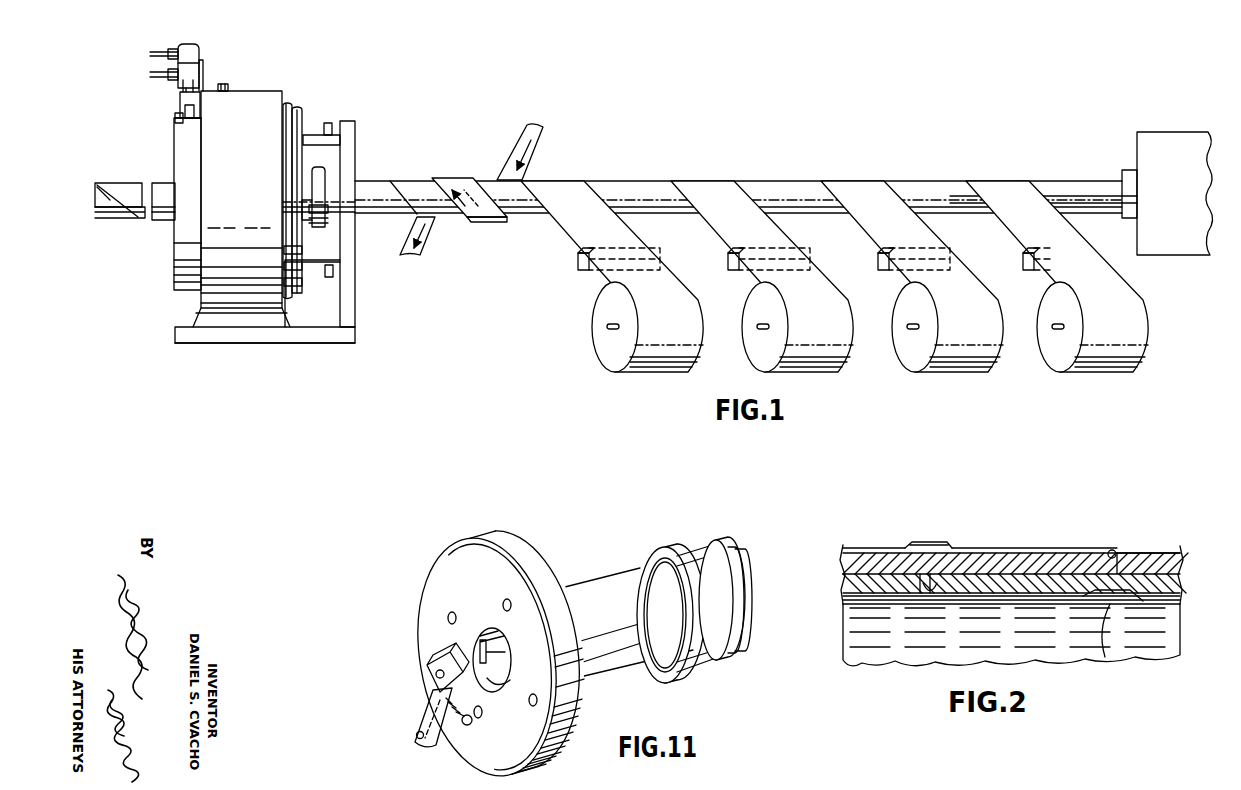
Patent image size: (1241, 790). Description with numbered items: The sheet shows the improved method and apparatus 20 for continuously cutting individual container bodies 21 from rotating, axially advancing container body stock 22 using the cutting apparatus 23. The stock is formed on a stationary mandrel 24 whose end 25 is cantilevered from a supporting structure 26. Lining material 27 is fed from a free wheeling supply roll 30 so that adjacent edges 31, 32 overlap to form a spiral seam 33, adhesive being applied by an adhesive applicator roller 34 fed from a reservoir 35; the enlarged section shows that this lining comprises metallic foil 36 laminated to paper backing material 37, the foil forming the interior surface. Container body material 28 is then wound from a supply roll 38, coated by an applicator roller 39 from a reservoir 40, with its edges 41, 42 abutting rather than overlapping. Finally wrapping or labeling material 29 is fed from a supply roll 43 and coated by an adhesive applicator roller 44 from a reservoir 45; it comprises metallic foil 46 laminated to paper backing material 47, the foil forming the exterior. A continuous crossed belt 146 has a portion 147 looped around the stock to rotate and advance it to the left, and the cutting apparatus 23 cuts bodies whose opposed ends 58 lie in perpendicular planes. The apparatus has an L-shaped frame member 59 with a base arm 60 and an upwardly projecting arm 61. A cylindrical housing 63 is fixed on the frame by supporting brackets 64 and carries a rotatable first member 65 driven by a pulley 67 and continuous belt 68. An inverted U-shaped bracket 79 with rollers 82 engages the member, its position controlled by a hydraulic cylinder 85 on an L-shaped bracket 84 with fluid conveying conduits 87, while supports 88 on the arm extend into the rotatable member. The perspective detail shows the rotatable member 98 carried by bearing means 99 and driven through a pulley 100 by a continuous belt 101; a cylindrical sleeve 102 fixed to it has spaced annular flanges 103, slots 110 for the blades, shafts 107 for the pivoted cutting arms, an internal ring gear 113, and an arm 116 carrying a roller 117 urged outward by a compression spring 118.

In FIG. 1, the improved method and apparatus 20 is at (738, 104).
In FIG. 1, the container body 21 is at (115, 181).
In FIG. 1, the container body stock 22 is at (384, 216).
In FIG. 2, the container body stock 22 is at (1078, 540).
In FIG. 1, the cutting apparatus 23 is at (273, 78).
In FIG. 1, the stationary mandrel 24 is at (1055, 181).
In FIG. 1, the end of mandrel 25 is at (1112, 181).
In FIG. 1, the supporting structure 26 is at (1172, 140).
In FIG. 1, the lining material 27 is at (1098, 264).
In FIG. 2, the lining material 27 is at (945, 600).
In FIG. 1, the container body material 28 is at (780, 233).
In FIG. 2, the container body material 28 is at (1182, 586).
In FIG. 1, the wrapping or labeling material 29 is at (631, 233).
In FIG. 2, the wrapping or labeling material 29 is at (1140, 555).
In FIG. 1, the supply roll 30 is at (1055, 364).
In FIG. 1, the edge of lining material 31 is at (1068, 225).
In FIG. 2, the edge of lining material 31 is at (1140, 604).
In FIG. 1, the edge of lining material 32 is at (1050, 278).
In FIG. 2, the edge of lining material 32 is at (1100, 600).
In FIG. 2, the spiral seam 33 is at (1107, 652).
In FIG. 1, the adhesive applicator roller 34 is at (1023, 256).
In FIG. 1, the reservoir 35 is at (1023, 266).
In FIG. 2, the metallic foil 36 is at (843, 604).
In FIG. 2, the paper backing material 37 is at (843, 592).
In FIG. 1, the supply roll 38 is at (775, 362).
In FIG. 1, the applicator roller 39 is at (728, 256).
In FIG. 1, the reservoir 40 is at (728, 270).
In FIG. 1, the edge of container body material 41 is at (815, 275).
In FIG. 2, the edge of container body material 41 is at (1128, 552).
In FIG. 1, the edge of container body material 42 is at (755, 290).
In FIG. 2, the edge of container body material 42 is at (1111, 550).
In FIG. 1, the supply roll 43 is at (610, 358).
In FIG. 1, the adhesive applicator roller 44 is at (578, 256).
In FIG. 1, the reservoir 45 is at (578, 268).
In FIG. 2, the metallic foil 46 is at (1000, 550).
In FIG. 2, the paper backing material 47 is at (1040, 549).
In FIG. 1, the opposed ends 58 is at (95, 190).
In FIG. 1, the L-shaped frame member 59 is at (175, 340).
In FIG. 1, the base arm 60 is at (255, 343).
In FIG. 1, the arm 61 is at (355, 300).
In FIG. 1, the cylindrical housing 63 is at (282, 92).
In FIG. 1, the supporting brackets 64 is at (195, 322).
In FIG. 1, the first member 65 is at (174, 262).
In FIG. 1, the pulley 67 is at (302, 112).
In FIG. 1, the continuous belt 68 is at (292, 106).
In FIG. 1, the inverted U-shaped bracket 79 is at (180, 100).
In FIG. 1, the rollers 82 is at (176, 119).
In FIG. 1, the L-shaped bracket 84 is at (204, 78).
In FIG. 1, the hydraulic cylinder 85 is at (199, 48).
In FIG. 1, the fluid conveying conduits 87 is at (153, 52).
In FIG. 1, the supports 88 is at (322, 148).
In FIG. 11, the rotatable member 98 is at (629, 668).
In FIG. 11, the bearing means 99 is at (655, 550).
In FIG. 1, the pulley 100 is at (326, 222).
In FIG. 11, the pulley 100 is at (729, 548).
In FIG. 1, the continuous belt 101 is at (314, 228).
In FIG. 11, the cylindrical sleeve 102 is at (505, 655).
In FIG. 11, the annular flanges 103 is at (549, 553).
In FIG. 11, the shaft 107 is at (451, 612).
In FIG. 11, the slot 110 is at (500, 684).
In FIG. 11, the internal ring gear 113 is at (476, 538).
In FIG. 11, the arm 116 is at (418, 712).
In FIG. 11, the roller 117 is at (422, 748).
In FIG. 11, the compression spring 118 is at (470, 710).
In FIG. 1, the continuous crossed belt 146 is at (527, 140).
In FIG. 1, the portion of belt 147 is at (463, 178).